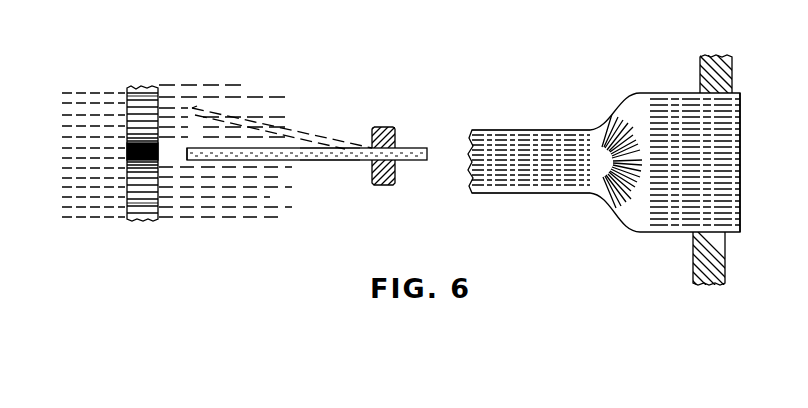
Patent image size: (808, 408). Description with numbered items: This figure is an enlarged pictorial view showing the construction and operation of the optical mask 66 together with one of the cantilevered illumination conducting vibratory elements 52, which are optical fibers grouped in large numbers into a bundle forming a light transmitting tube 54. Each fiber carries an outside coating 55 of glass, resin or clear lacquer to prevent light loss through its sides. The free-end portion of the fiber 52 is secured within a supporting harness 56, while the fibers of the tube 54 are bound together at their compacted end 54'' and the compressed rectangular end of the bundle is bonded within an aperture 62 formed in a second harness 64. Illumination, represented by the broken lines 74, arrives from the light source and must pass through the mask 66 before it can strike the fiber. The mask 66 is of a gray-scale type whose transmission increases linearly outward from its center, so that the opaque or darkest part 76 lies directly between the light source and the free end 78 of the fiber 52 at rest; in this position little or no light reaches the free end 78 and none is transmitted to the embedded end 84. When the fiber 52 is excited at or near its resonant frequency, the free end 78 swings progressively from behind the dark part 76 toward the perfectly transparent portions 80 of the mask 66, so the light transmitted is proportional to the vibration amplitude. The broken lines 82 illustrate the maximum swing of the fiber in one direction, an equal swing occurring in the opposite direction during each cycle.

The illumination conducting vibratory element 52 is at (258, 160).
The light transmitting tube 54 is at (604, 162).
The compacted end 54'' is at (671, 162).
The outside coating 55 is at (302, 161).
The supporting harness 56 is at (393, 108).
The aperture 62 is at (697, 222).
The second harness 64 is at (698, 70).
The optical mask 66 is at (140, 221).
The illumination 74 is at (99, 93).
The opaque or darkest part 76 is at (127, 149).
The free end 78 is at (187, 154).
The perfectly transparent portions 80 is at (127, 96).
The broken lines 82 is at (230, 115).
The embedded end 84 is at (742, 97).